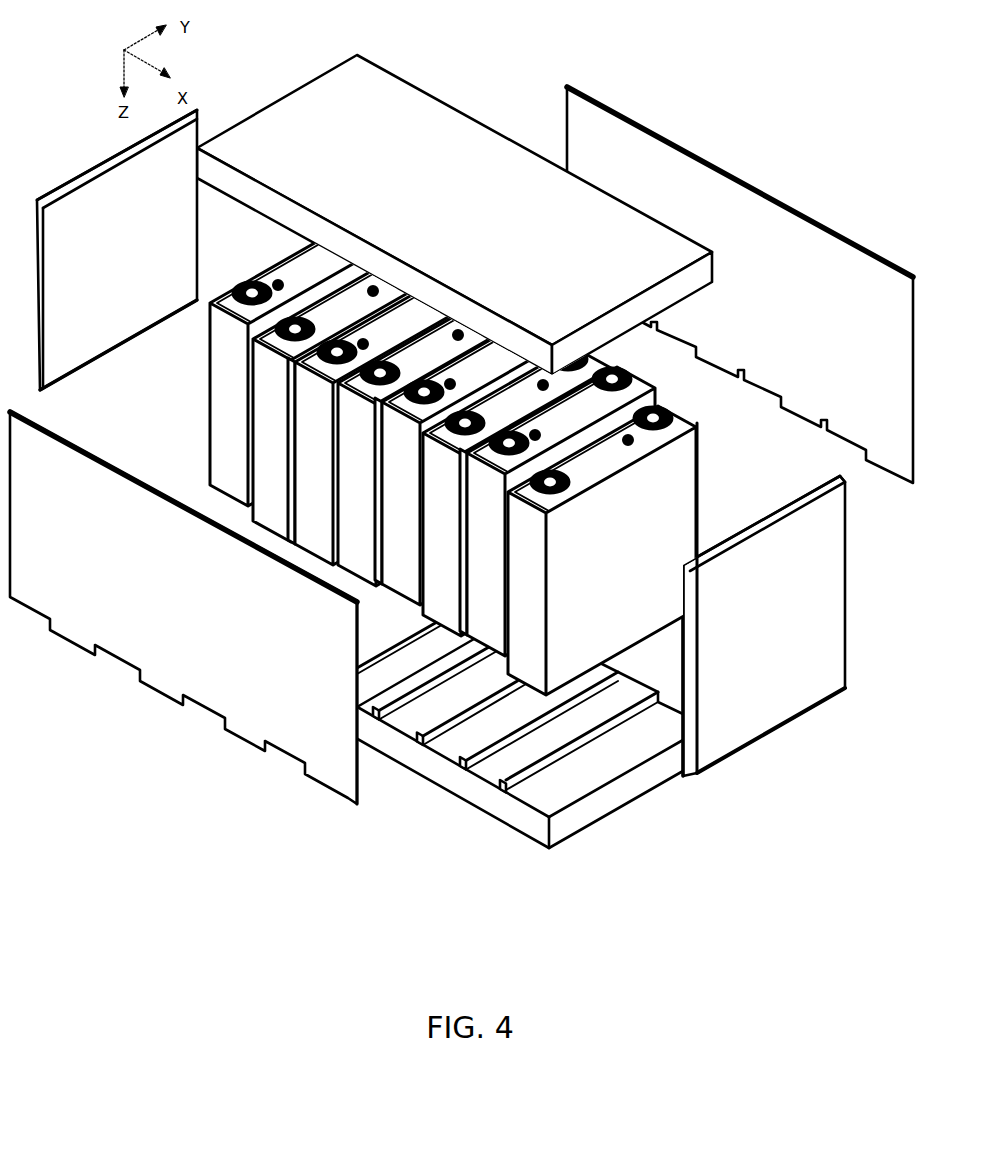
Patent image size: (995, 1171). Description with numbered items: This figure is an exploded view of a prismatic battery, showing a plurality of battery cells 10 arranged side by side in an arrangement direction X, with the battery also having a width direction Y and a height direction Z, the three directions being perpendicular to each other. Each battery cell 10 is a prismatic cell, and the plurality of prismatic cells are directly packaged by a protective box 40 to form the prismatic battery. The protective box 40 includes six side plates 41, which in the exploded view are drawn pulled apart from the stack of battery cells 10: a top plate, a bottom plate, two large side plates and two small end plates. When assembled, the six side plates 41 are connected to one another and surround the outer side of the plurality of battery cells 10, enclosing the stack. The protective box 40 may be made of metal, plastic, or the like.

The battery cell 10 is at (655, 483).
The protective box 40 is at (461, 505).
The side plate 41 is at (115, 330).